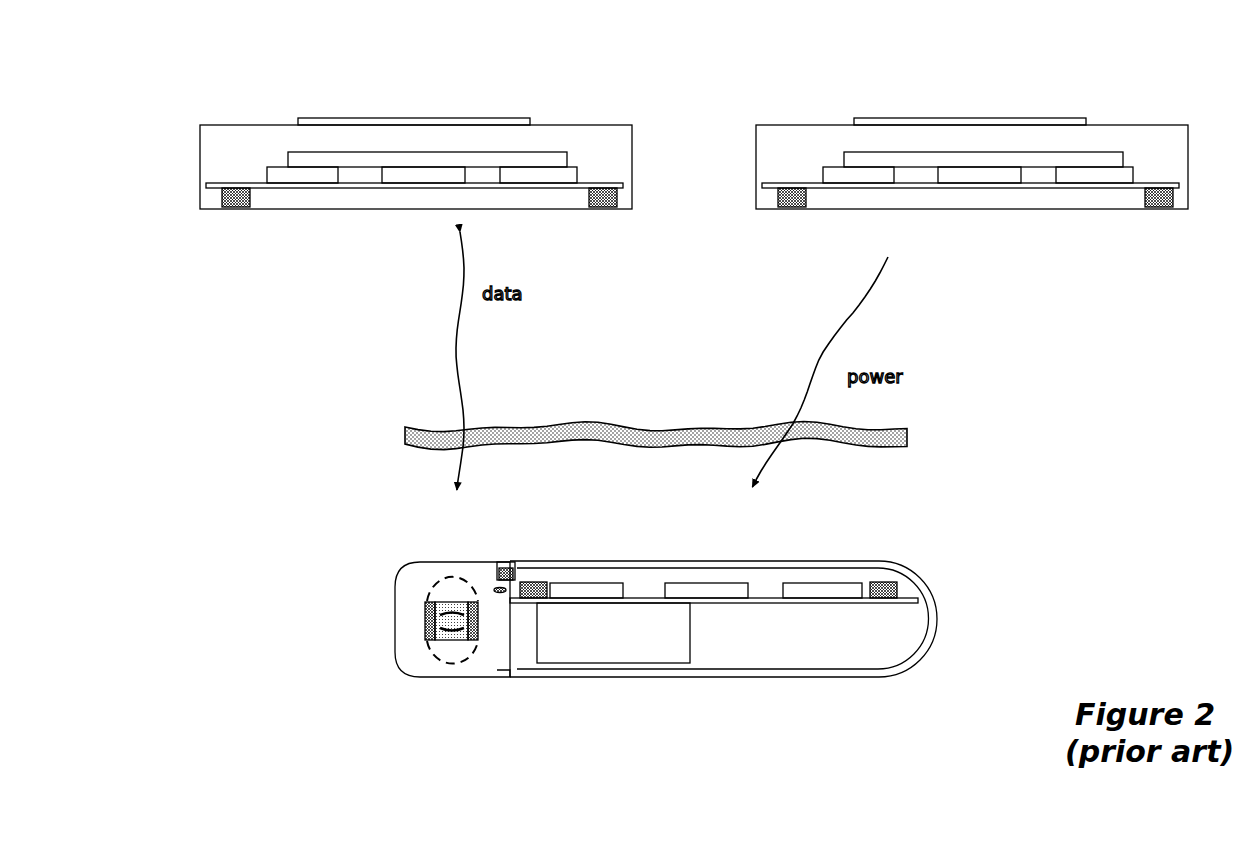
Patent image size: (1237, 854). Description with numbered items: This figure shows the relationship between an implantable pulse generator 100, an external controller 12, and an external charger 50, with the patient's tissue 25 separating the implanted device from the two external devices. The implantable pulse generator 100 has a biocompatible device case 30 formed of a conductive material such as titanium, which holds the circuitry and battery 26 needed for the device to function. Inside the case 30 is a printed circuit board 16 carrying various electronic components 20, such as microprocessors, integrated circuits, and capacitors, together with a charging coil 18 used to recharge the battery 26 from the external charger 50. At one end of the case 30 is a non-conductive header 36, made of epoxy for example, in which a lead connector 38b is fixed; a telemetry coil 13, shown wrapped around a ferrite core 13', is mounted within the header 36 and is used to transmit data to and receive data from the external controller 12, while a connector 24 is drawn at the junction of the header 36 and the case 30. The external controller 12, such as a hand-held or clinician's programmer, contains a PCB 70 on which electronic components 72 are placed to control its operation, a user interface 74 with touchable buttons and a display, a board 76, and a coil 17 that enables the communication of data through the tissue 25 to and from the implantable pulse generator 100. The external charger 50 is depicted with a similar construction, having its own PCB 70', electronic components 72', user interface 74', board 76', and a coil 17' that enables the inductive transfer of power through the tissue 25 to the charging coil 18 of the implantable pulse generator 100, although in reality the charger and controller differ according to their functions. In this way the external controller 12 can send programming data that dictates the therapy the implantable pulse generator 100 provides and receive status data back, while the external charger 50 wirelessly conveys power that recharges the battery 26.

The external controller 12 is at (264, 84).
The external charger 50 is at (821, 84).
The PCB 70 is at (414, 138).
The circuit board 76 is at (427, 132).
The user interface 74 is at (414, 100).
The electronic components 72 is at (423, 157).
The coil 17 is at (419, 207).
The substrate 70' is at (970, 138).
The circuit board 76' is at (983, 132).
The top plate 74' is at (970, 100).
The electronic components 72' is at (982, 157).
The coil 17' is at (974, 207).
The patient's tissue 25 is at (616, 437).
The Implantable Pulse Generator 100 is at (373, 716).
The header 36 is at (420, 562).
The device case 30 is at (555, 677).
The connector 24 is at (494, 577).
The printed circuit board 16 is at (761, 598).
The battery 26 is at (613, 633).
The electronic components 20 is at (589, 590).
The charging coil 18 is at (532, 582).
The telemetry coil 13 is at (438, 634).
The ferrite core 13' is at (433, 610).
The lead connector 38b is at (446, 580).